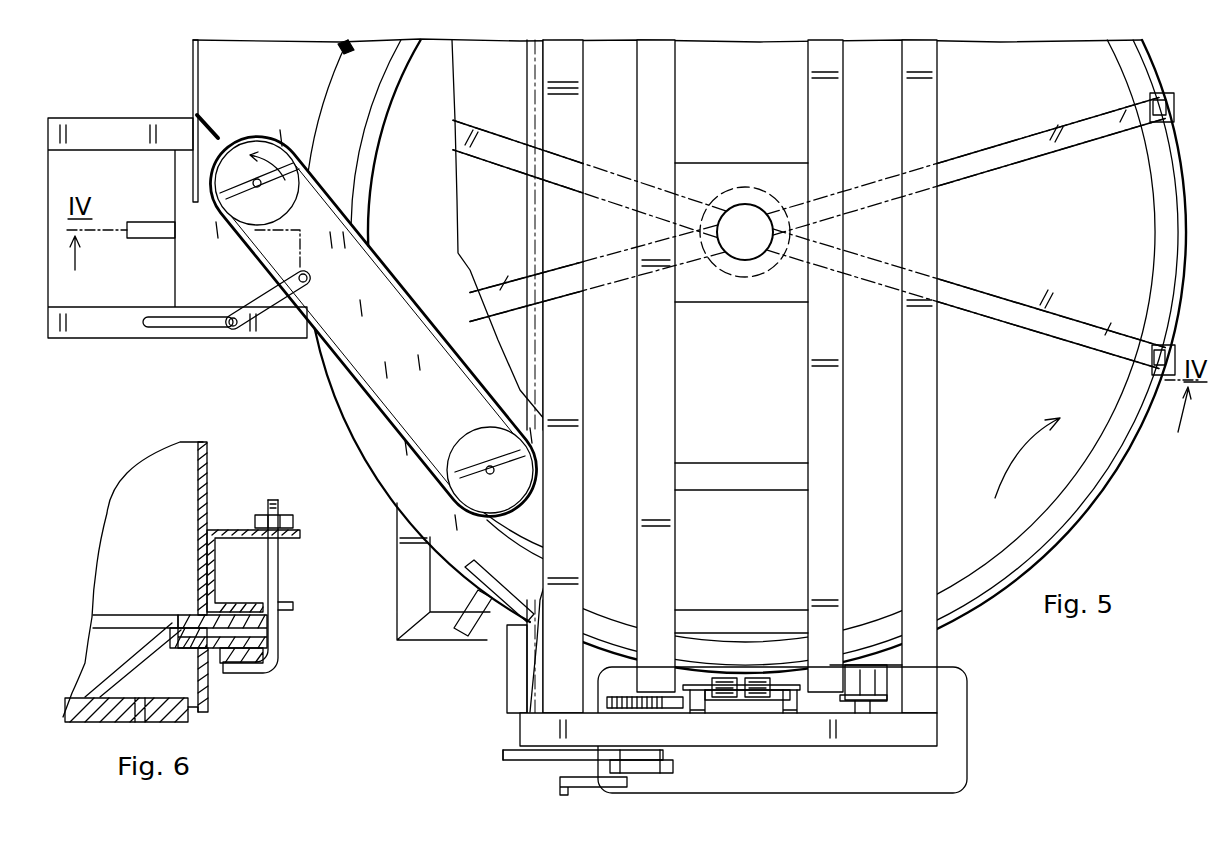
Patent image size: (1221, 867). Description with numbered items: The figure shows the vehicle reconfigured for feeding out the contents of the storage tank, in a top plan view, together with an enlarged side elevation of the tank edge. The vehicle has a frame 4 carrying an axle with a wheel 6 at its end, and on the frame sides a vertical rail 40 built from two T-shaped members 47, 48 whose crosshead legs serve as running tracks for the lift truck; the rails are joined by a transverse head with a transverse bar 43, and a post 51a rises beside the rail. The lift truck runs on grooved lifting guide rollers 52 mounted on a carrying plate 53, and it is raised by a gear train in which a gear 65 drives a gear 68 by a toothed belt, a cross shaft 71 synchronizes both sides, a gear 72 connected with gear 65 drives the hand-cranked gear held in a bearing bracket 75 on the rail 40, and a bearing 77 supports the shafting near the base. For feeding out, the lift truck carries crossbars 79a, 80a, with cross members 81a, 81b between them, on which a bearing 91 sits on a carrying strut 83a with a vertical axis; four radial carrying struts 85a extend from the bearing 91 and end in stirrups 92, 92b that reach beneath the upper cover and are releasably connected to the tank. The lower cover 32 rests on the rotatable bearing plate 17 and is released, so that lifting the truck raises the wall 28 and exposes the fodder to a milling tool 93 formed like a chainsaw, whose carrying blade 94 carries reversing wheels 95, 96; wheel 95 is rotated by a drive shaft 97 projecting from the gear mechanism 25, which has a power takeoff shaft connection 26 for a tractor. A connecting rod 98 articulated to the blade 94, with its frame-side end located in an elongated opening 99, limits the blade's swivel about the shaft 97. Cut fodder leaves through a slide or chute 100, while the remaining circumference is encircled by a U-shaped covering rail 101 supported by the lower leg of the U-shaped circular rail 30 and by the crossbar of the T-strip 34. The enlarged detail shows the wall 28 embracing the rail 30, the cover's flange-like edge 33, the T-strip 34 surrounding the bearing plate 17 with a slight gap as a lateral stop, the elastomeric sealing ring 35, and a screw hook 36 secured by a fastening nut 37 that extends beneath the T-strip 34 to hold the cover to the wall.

In FIG. 5, the frame 4 is at (408, 593).
In FIG. 5, the wheel 6 is at (968, 756).
In FIG. 6, the bearing plate 17 is at (107, 705).
In FIG. 5, the gear mechanism 25 is at (175, 192).
In FIG. 5, the power takeoff shaft connection 26 is at (147, 238).
In FIG. 6, the wall 28 is at (207, 460).
In FIG. 6, the U-shaped circular rail 30 is at (232, 528).
In FIG. 6, the cover 32 is at (100, 693).
In FIG. 6, the flange-like edge 33 is at (187, 649).
In FIG. 6, the T-strip 34 is at (210, 697).
In FIG. 6, the sealing ring 35 is at (205, 612).
In FIG. 6, the screw hook 36 is at (282, 572).
In FIG. 6, the fastening nut 37 is at (284, 514).
In FIG. 5, the vertical rail 40 is at (820, 735).
In FIG. 5, the transverse bar 43 is at (580, 72).
In FIG. 5, the T-shaped member 47 is at (692, 712).
In FIG. 5, the T-shaped member 48 is at (797, 705).
In FIG. 5, the post 51a is at (900, 93).
In FIG. 5, the lifting guide roller 52 is at (757, 682).
In FIG. 5, the carrying plate 53 is at (722, 682).
In FIG. 5, the gear 65 is at (627, 753).
In FIG. 5, the gear 68 is at (518, 752).
In FIG. 5, the cross shaft 71 is at (528, 68).
In FIG. 5, the gear 72 is at (598, 762).
In FIG. 5, the bearing bracket 75 is at (668, 756).
In FIG. 5, the bearing 77 is at (890, 684).
In FIG. 5, the crossbar 79a is at (655, 362).
In FIG. 5, the crossbar 80a is at (832, 232).
In FIG. 5, the cross bar 81a is at (735, 474).
In FIG. 5, the cross bar 81b is at (735, 622).
In FIG. 5, the carrying strut 83a is at (747, 298).
In FIG. 5, the carrying strut 85a is at (497, 158).
In FIG. 5, the bearing 91 is at (740, 218).
In FIG. 5, the stirrup 92 is at (1172, 352).
In FIG. 5, the clip 92b is at (1172, 100).
In FIG. 5, the milling tool 93 is at (386, 442).
In FIG. 5, the carrying blade 94 is at (345, 376).
In FIG. 5, the reversing wheel 95 is at (250, 150).
In FIG. 5, the reversing wheel 96 is at (470, 487).
In FIG. 5, the drive shaft 97 is at (253, 188).
In FIG. 5, the connecting rod 98 is at (262, 312).
In FIG. 5, the elongated opening 99 is at (195, 327).
In FIG. 5, the slide or chute 100 is at (193, 58).
In FIG. 5, the U-shaped covering rail 101 is at (342, 48).